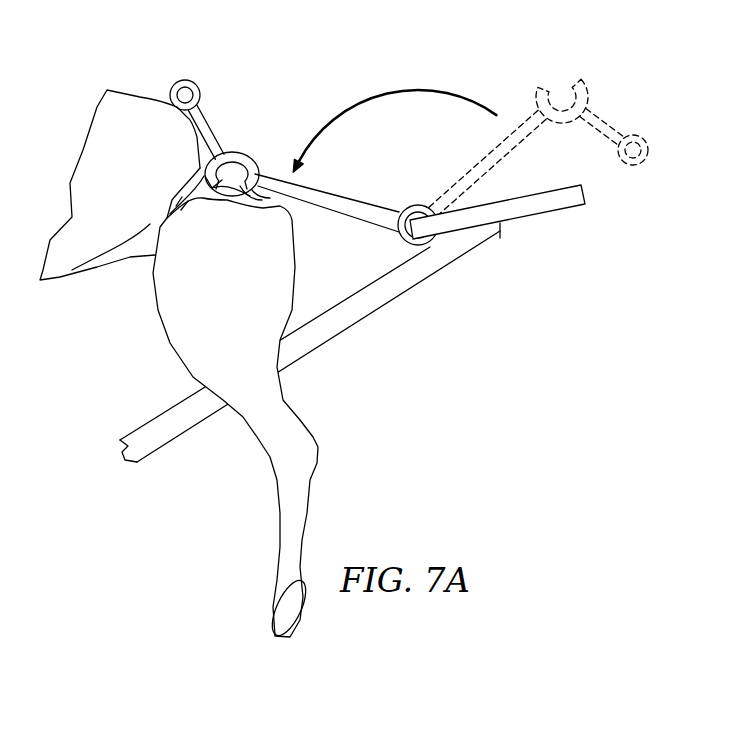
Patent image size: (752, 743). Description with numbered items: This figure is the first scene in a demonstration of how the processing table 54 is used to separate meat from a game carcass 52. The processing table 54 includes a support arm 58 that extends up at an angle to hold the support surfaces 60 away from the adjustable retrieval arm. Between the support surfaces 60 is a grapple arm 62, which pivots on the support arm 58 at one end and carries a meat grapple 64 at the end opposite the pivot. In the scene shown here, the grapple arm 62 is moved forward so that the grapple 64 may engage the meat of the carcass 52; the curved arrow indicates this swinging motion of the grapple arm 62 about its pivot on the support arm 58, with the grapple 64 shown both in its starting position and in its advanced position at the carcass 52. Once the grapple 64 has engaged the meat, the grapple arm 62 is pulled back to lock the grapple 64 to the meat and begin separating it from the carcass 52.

The carcass 52 is at (140, 96).
The processing table 54 is at (426, 302).
The support arm 58 is at (352, 326).
The support surfaces 60 is at (543, 214).
The grapple arm 62 is at (345, 202).
The meat grapple 64 is at (243, 147).